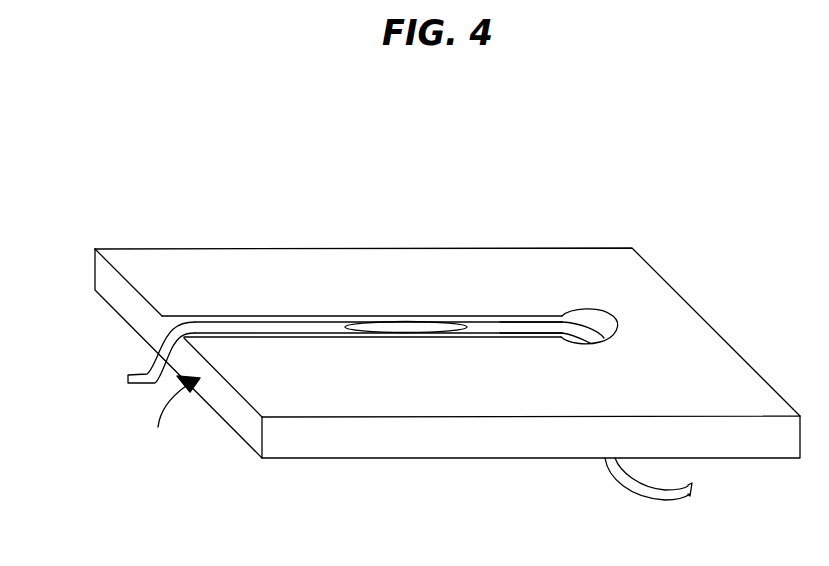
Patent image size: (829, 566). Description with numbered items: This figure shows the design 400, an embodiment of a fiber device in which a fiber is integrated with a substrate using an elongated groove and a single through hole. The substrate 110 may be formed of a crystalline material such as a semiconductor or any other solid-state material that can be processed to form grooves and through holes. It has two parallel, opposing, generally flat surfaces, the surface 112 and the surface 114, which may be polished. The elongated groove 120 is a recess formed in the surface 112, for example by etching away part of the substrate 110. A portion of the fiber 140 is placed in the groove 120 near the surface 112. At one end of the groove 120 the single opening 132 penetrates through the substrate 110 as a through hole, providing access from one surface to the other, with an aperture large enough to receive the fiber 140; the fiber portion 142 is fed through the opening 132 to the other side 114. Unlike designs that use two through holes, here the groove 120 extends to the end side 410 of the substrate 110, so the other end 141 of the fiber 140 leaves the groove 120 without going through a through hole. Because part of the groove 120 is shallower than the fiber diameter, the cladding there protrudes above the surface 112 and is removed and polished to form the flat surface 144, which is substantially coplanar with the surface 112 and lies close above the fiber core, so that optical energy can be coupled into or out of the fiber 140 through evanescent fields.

The design 400 is at (600, 176).
The substrate 110 is at (94, 270).
The substrate surface 112 is at (137, 270).
The substrate surface 114 is at (117, 312).
The elongated groove 120 is at (335, 312).
The fiber portion 141 is at (145, 373).
The flat surface 144 is at (406, 320).
The fiber 140 is at (532, 328).
The opening 132 is at (611, 331).
The fiber portion 142 is at (681, 502).
The end side 410 is at (172, 422).